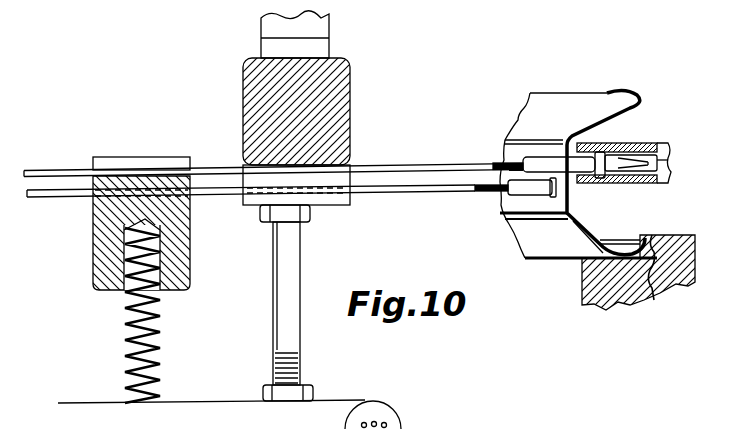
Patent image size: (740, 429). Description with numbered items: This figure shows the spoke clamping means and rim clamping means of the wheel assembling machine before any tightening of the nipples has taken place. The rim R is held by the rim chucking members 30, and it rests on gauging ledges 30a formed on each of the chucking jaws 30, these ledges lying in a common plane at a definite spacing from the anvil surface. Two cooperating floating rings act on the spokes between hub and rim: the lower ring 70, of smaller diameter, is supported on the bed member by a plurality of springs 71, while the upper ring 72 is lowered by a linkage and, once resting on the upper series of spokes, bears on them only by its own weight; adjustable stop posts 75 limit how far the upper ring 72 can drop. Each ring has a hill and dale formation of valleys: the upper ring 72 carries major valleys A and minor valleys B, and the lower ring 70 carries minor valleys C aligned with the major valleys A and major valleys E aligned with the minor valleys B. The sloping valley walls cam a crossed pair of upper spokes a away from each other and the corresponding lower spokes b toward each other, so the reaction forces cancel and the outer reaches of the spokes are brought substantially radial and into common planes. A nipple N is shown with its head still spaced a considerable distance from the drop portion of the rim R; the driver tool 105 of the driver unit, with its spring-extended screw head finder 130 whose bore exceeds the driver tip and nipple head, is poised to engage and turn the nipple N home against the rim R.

The lower ring 70 is at (93, 240).
The springs 71 is at (125, 336).
The upper ring 72 is at (243, 100).
The adjustable stop posts 75 is at (295, 269).
The rim chucking members 30 is at (668, 235).
The gauging ledges 30a is at (655, 282).
The driver tool 105 is at (627, 157).
The screw head finder 130 is at (657, 143).
The major valleys E is at (90, 186).
The minor valleys C is at (135, 161).
The major valleys A is at (338, 180).
The minor valleys B is at (250, 197).
The spokes of upper series a is at (409, 163).
The spokes of lower series b is at (402, 188).
The rim R is at (566, 93).
The nipple N is at (570, 178).